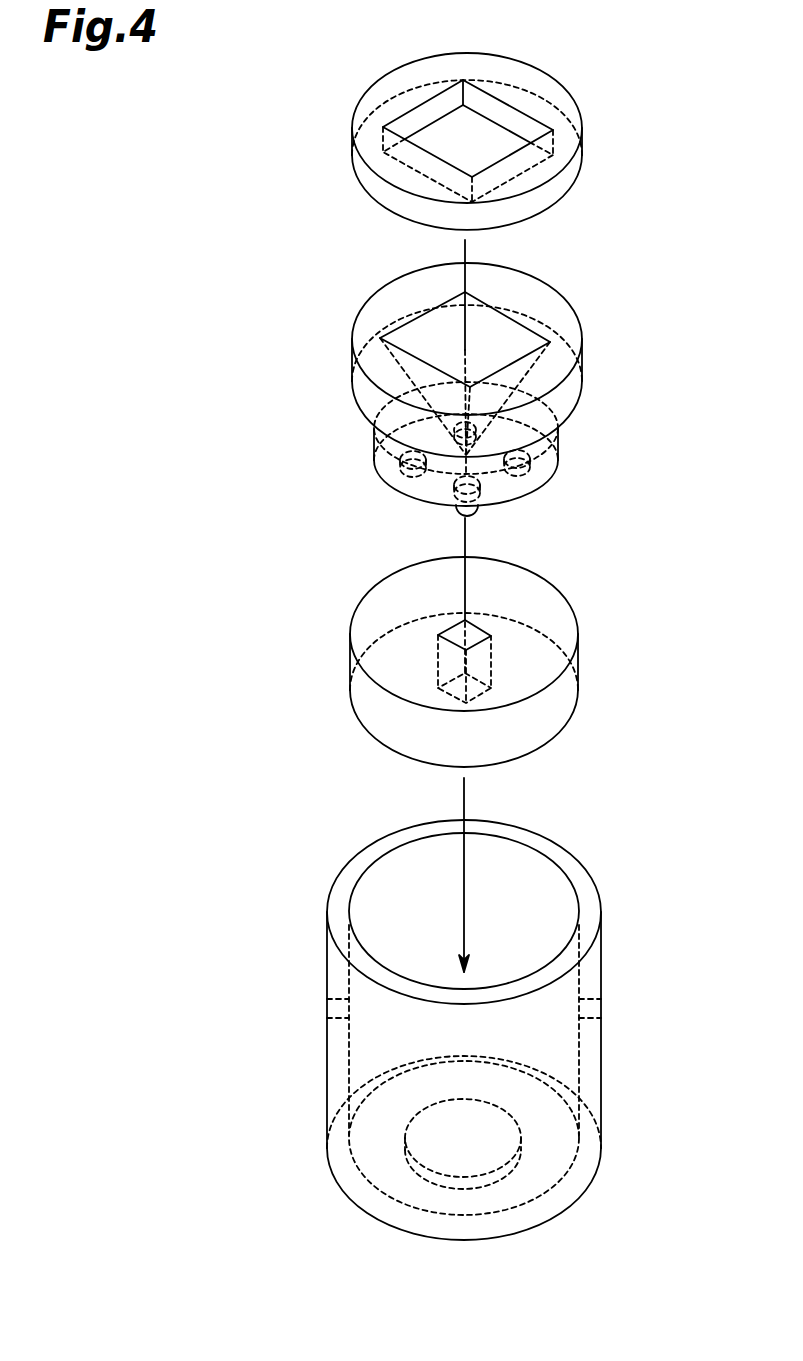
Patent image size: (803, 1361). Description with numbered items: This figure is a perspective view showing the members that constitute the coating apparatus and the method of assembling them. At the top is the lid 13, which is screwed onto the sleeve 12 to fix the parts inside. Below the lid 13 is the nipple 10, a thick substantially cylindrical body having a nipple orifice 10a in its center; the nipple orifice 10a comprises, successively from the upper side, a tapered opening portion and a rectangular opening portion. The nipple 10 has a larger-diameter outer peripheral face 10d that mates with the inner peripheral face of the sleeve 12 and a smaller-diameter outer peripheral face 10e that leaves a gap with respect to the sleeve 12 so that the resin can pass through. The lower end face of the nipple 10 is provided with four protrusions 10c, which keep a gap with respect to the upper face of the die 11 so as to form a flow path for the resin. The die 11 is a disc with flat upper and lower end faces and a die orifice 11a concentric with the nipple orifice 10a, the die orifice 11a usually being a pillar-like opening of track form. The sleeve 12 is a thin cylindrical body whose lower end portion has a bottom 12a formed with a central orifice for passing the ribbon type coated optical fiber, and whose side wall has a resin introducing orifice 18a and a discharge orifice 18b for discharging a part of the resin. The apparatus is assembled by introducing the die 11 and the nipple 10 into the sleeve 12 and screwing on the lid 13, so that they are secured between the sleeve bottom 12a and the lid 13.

The lid 13 is at (597, 103).
The nipple 10 is at (522, 376).
The nipple orifice 10a is at (517, 332).
The outer peripheral face 10d is at (572, 377).
The outer peripheral face 10e is at (555, 428).
The protrusions 10c is at (532, 476).
The die 11 is at (517, 644).
The die orifice 11a is at (473, 627).
The sleeve 12 is at (479, 1030).
The bottom 12a is at (567, 1202).
The resin introducing orifice 18a is at (603, 1012).
The discharge orifice 18b is at (325, 1012).